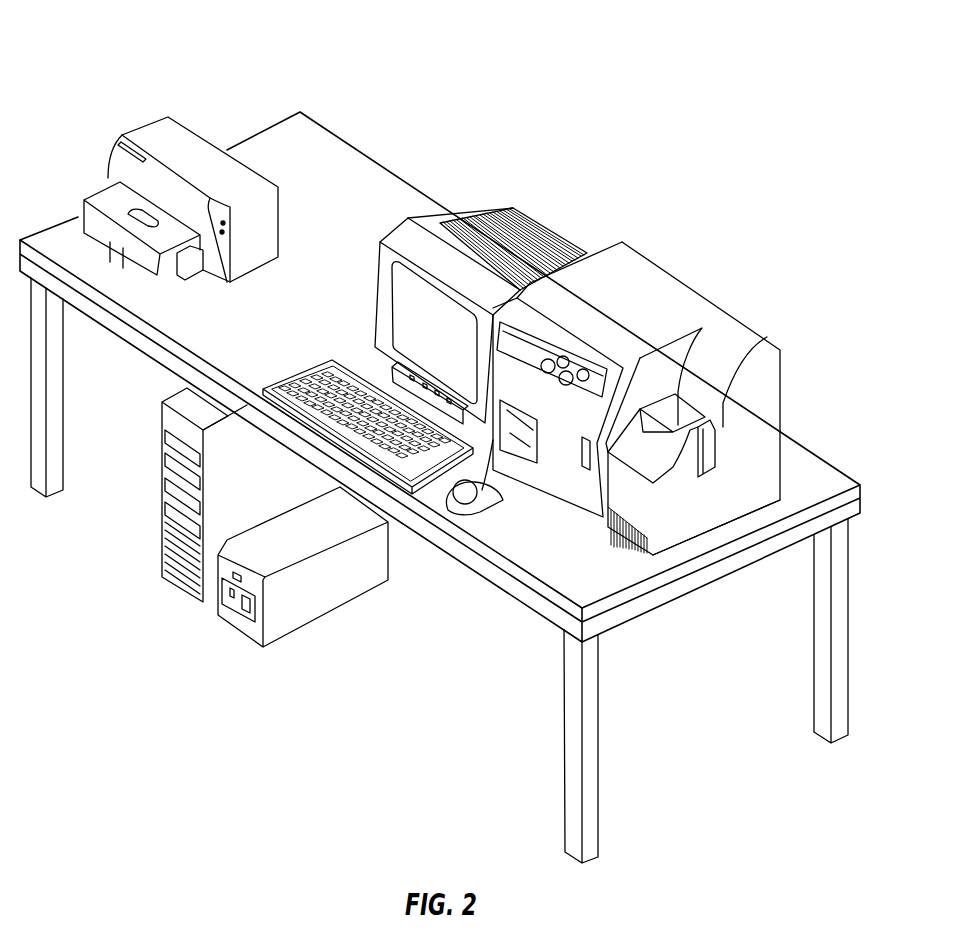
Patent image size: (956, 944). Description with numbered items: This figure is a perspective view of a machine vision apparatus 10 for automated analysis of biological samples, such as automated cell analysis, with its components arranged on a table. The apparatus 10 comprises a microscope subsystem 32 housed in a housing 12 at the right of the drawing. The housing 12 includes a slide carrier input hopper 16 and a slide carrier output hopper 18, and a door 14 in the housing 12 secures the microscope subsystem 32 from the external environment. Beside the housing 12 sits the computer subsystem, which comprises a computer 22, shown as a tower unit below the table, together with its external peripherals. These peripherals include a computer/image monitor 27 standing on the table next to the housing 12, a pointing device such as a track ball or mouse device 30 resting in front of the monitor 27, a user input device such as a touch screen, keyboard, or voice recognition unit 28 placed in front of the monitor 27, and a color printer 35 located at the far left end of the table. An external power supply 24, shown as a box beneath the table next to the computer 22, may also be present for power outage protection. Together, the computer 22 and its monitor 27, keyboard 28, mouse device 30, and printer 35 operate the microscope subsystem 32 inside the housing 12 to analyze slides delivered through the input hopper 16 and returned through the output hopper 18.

The machine vision apparatus 10 is at (697, 50).
The housing 12 is at (685, 280).
The door 14 is at (580, 493).
The slide carrier input hopper 16 is at (690, 412).
The slide carrier output hopper 18 is at (530, 453).
The computer 22 is at (183, 588).
The external power supply 24 is at (240, 625).
The computer/image monitor 27 is at (527, 217).
The user input device 28 is at (300, 377).
The pointing device 30 is at (448, 507).
The microscope subsystem 32 is at (762, 455).
The color printer 35 is at (147, 127).